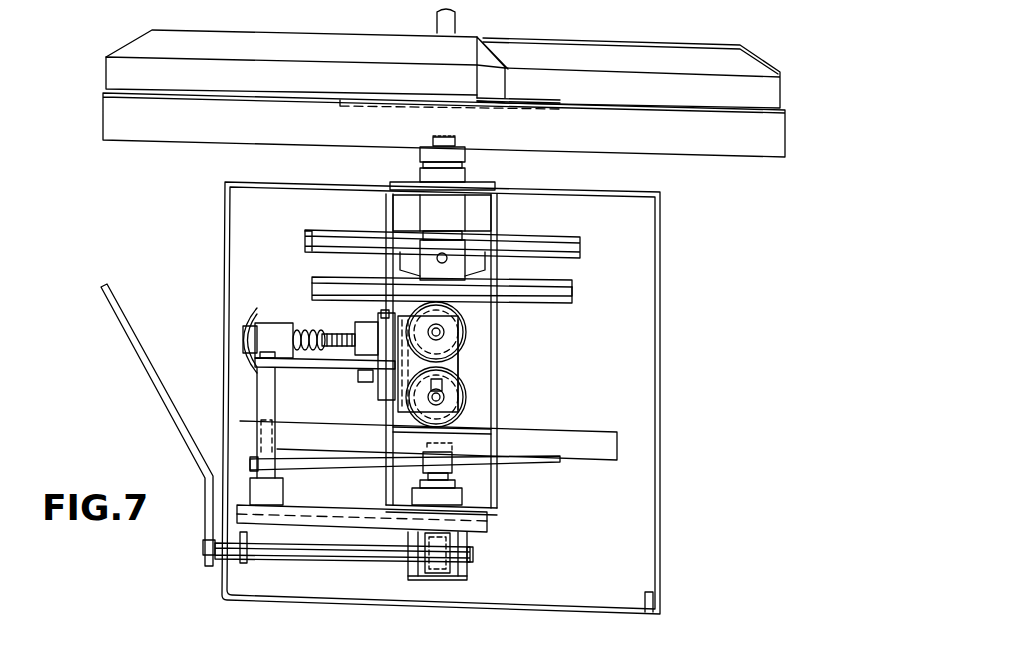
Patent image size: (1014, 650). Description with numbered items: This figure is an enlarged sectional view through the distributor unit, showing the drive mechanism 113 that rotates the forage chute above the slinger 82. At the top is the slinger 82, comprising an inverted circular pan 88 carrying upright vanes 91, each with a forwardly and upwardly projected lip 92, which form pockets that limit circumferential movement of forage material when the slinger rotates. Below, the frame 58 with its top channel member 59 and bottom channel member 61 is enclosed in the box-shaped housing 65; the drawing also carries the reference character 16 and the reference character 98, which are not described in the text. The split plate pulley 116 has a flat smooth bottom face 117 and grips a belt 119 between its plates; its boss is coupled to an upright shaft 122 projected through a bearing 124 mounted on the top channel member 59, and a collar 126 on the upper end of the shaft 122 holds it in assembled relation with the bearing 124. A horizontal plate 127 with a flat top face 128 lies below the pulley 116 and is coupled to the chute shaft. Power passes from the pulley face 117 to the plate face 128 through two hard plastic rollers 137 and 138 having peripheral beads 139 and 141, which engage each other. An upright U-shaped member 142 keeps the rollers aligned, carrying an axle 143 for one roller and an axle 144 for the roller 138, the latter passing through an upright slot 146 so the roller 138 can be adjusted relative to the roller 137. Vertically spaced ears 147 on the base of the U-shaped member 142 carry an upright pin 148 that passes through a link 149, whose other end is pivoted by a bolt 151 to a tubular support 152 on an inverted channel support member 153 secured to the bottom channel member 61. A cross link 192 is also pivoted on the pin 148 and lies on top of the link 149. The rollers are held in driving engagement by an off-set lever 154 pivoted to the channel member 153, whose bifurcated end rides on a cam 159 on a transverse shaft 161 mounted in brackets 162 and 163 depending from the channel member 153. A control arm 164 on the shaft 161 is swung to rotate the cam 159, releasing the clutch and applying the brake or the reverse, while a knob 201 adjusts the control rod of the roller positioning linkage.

The frame 16 is at (482, 418).
The frame 58 is at (497, 360).
The top channel member 59 is at (498, 212).
The bottom channel member 61 is at (497, 495).
The housing 65 is at (661, 483).
The slinger 82 is at (785, 67).
The inverted circular pan 88 is at (751, 143).
The upright vane 91 is at (770, 90).
The lip 92 is at (642, 20).
The upper pulley 98 is at (578, 238).
The drive mechanism 113 is at (253, 255).
The split plate pulley 116 is at (562, 280).
The flat bottom face 117 is at (540, 307).
The belt 119 is at (566, 296).
The upright shaft 122 is at (456, 138).
The bearing 124 is at (428, 172).
The collar 126 is at (466, 153).
The horizontal plate 127 is at (592, 450).
The flat top face 128 is at (581, 430).
The roller 137 is at (446, 308).
The roller 138 is at (446, 423).
The peripheral bead 139 is at (465, 340).
The peripheral bead 141 is at (458, 385).
The U-shaped member 142 is at (406, 428).
The axle 143 is at (445, 332).
The axle 144 is at (443, 392).
The upright slot 146 is at (445, 403).
The ears 147 is at (372, 330).
The upright pin 148 is at (380, 315).
The link 149 is at (295, 367).
The bolt 151 is at (271, 338).
The tubular support 152 is at (256, 397).
The inverted channel support member 153 is at (330, 520).
The off-set lever 154 is at (435, 580).
The cam 159 is at (434, 553).
The transverse shaft 161 is at (300, 558).
The bracket 162 is at (246, 565).
The bracket 163 is at (466, 572).
The control arm 164 is at (125, 330).
The cross link 192 is at (345, 363).
The knob 201 is at (243, 310).